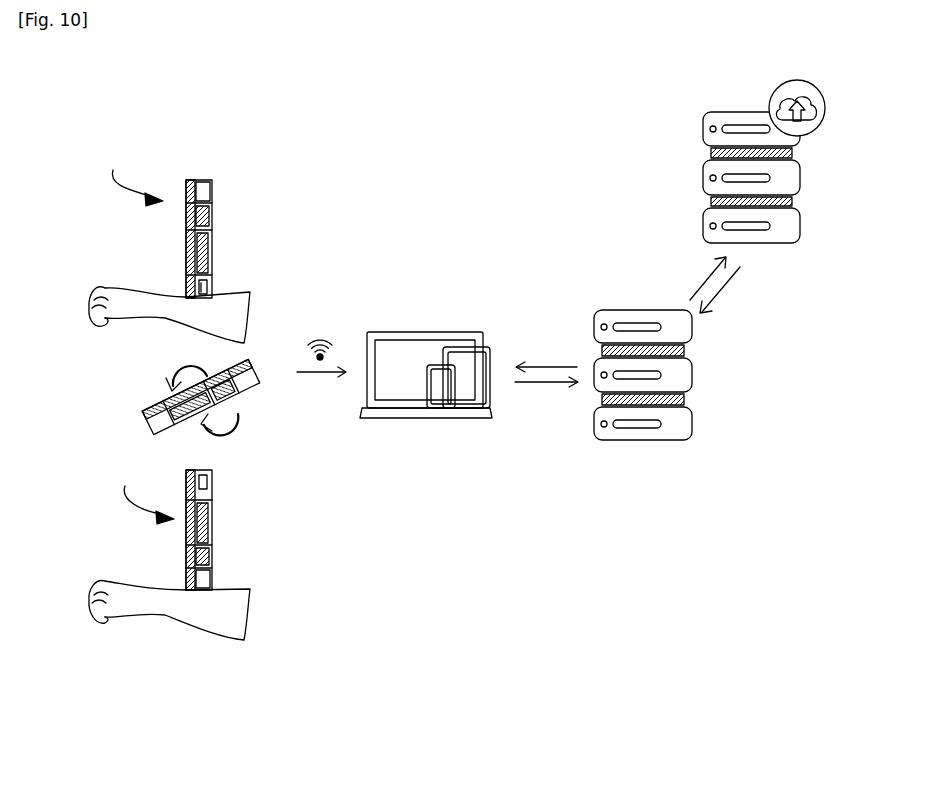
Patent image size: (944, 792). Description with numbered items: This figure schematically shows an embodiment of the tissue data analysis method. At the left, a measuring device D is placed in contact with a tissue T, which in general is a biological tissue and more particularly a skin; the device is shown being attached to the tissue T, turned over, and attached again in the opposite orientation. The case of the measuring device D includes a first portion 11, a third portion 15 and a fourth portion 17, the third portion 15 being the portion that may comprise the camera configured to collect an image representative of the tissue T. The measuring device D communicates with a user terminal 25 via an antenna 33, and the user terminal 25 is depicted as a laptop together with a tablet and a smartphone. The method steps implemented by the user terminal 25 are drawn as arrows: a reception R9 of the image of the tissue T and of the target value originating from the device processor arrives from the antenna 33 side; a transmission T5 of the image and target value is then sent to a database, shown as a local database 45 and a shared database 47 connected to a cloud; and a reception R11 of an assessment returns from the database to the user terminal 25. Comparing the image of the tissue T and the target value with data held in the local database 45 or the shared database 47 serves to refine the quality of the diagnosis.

The first portion 11 is at (210, 280).
The third portion 15 is at (209, 194).
The fourth portion 17 is at (190, 246).
The user terminal 25 is at (415, 332).
The antenna 33 is at (320, 338).
The local database 45 is at (643, 310).
The shared database 47 is at (733, 112).
The tissue T is at (157, 320).
The measuring device D is at (140, 337).
The reception of the image and target value R9 is at (322, 372).
The reception of an assessment R11 is at (546, 355).
The transmission of the image and target value T5 is at (536, 384).